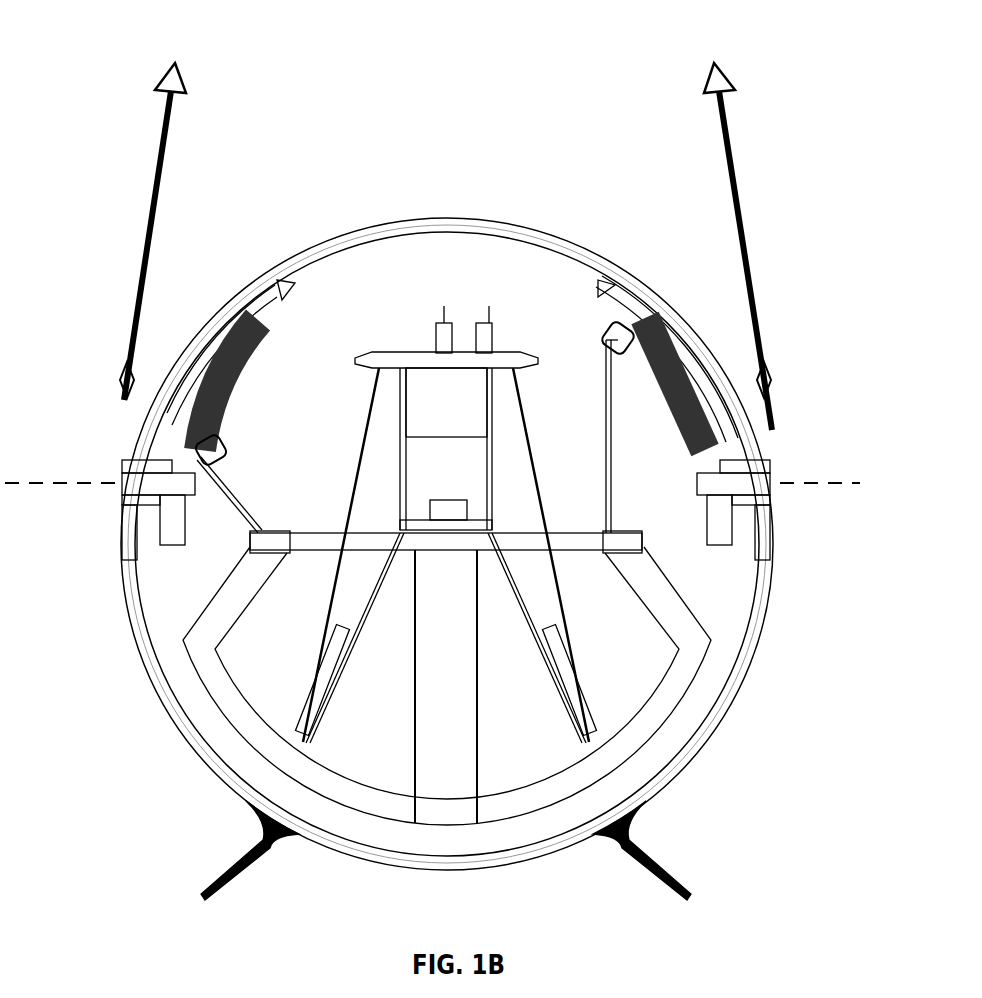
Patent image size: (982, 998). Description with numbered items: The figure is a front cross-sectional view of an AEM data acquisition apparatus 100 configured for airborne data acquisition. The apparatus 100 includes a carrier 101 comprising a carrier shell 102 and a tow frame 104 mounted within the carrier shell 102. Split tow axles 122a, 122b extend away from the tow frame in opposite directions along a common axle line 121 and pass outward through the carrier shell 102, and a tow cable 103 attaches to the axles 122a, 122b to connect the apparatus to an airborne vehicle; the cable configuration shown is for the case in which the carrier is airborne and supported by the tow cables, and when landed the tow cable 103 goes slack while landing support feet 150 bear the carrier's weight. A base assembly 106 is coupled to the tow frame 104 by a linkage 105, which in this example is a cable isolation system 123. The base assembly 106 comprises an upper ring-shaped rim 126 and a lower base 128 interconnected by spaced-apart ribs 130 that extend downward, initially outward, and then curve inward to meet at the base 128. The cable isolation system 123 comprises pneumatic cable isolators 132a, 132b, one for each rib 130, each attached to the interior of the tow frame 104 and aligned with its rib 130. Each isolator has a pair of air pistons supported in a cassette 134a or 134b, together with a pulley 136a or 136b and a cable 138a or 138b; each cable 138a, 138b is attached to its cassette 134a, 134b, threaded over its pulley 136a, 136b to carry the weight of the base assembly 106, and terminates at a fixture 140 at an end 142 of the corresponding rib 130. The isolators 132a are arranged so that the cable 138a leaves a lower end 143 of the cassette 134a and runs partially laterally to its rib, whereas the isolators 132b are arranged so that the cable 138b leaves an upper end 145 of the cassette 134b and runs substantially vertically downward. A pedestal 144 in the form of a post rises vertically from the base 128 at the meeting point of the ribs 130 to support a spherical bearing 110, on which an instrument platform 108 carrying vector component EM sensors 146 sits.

The AEM data acquisition apparatus 100 is at (455, 70).
The carrier 101 is at (335, 225).
The carrier shell 102 is at (455, 223).
The tow cable 103 is at (140, 198).
The tow frame 104 is at (732, 432).
The linkage 105 is at (593, 488).
The base assembly 106 is at (232, 752).
The instrument platform 108 is at (373, 629).
The spherical bearing 110 is at (425, 528).
The axis 121 is at (832, 481).
The split tow axle 122a is at (162, 493).
The split tow axle 122b is at (735, 495).
The cable isolation system 123 is at (289, 336).
The upper ring-shaped rim 126 is at (568, 533).
The lower base 128 is at (417, 840).
The rib 130 is at (195, 645).
The pneumatic cable isolator 132a is at (240, 420).
The pneumatic cable isolator 132b is at (645, 410).
The cassette 134a is at (250, 337).
The cassette 134b is at (640, 337).
The pulley 136a is at (222, 455).
The pulley 136b is at (610, 328).
The cable 138a is at (240, 503).
The cable 138b is at (605, 417).
The fixture 140 is at (252, 542).
The rib end 142 is at (291, 573).
The lower end of cassette 143 is at (173, 452).
The pedestal 144 is at (465, 690).
The upper end of cassette 145 is at (623, 302).
The vector component EM sensor 146 is at (325, 707).
The landing support foot 150 is at (222, 886).